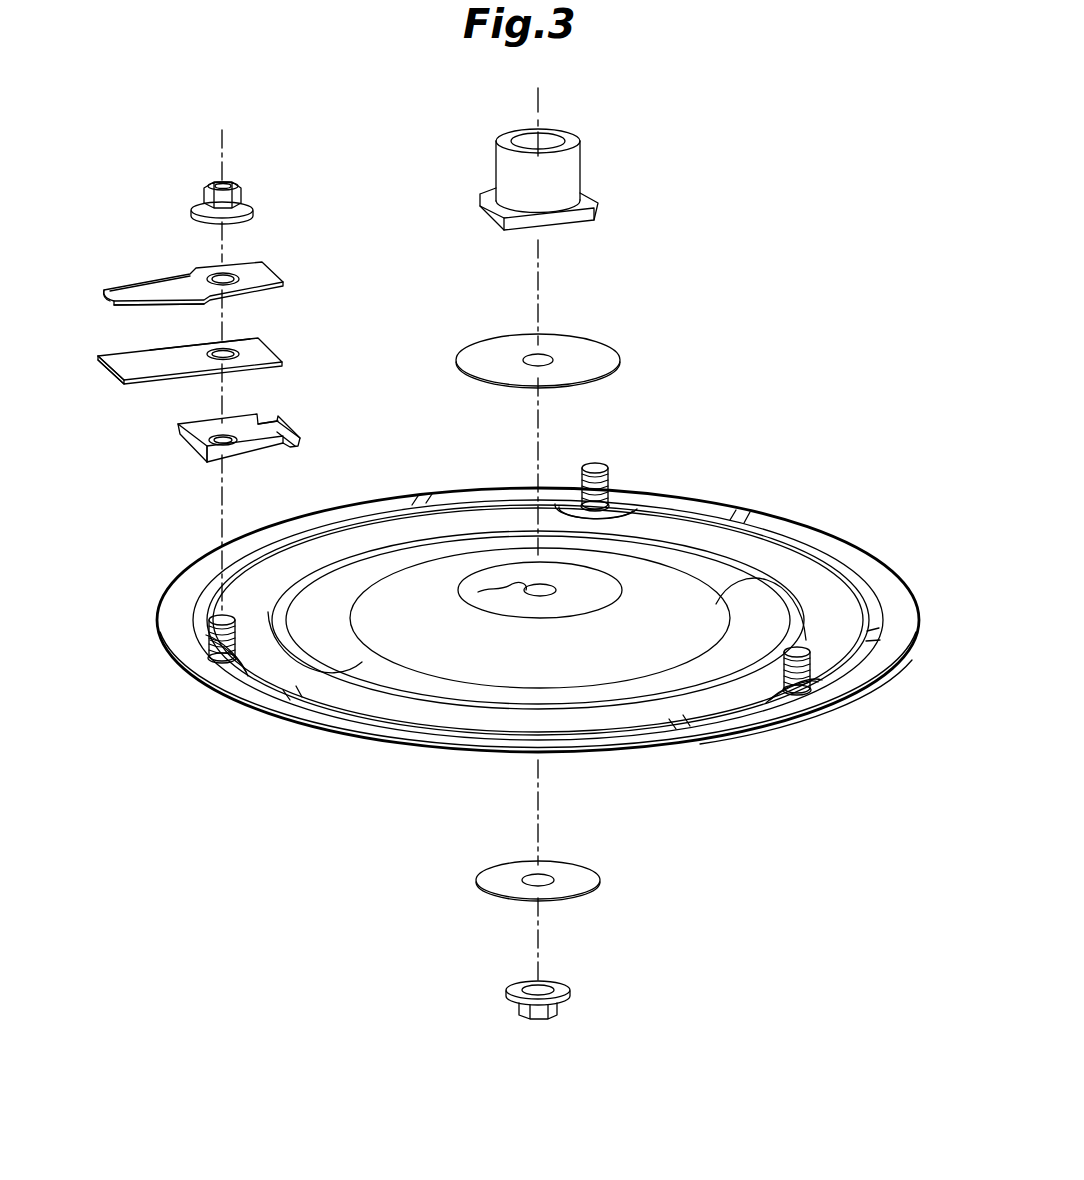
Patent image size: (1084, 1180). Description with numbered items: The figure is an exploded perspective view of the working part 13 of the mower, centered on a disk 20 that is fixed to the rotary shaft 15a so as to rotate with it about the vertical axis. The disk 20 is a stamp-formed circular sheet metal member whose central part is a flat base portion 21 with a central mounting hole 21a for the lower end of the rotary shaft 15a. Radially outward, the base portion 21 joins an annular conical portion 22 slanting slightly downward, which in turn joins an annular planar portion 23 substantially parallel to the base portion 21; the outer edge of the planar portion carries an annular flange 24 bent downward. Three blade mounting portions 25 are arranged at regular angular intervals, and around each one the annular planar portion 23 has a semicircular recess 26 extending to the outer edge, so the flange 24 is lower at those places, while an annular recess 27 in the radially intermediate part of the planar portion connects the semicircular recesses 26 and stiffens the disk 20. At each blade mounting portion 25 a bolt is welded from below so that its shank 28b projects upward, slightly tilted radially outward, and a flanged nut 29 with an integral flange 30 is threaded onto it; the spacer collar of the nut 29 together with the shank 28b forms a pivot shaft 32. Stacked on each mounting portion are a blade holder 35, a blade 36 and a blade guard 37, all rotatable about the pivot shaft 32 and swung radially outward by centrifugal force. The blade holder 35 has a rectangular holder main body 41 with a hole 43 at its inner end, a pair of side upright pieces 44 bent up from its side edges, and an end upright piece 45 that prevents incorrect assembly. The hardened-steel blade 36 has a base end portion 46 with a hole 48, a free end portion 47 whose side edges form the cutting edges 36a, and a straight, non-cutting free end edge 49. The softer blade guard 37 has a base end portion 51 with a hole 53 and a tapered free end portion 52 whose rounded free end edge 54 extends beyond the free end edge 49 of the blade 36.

The working part 13 is at (765, 150).
The rotary shaft 15a is at (575, 173).
The disk 20 is at (796, 520).
The base portion 21 is at (598, 598).
The central mounting hole 21a is at (472, 592).
The conical portion 22 is at (812, 578).
The annular planar portion 23 is at (890, 580).
The annular flange 24 is at (892, 660).
The blade mounting portion 25 is at (632, 506).
The semicircular recess 26 is at (714, 504).
The annular recess 27 is at (842, 606).
The shank 28b is at (604, 478).
The nut 29 is at (232, 190).
The flange 30 is at (200, 206).
The pivot shaft 32 is at (600, 464).
The blade holder 35 is at (174, 452).
The blade 36 is at (112, 380).
The cutting edge 36a is at (142, 356).
The blade guard 37 is at (104, 304).
The holder main body 41 is at (198, 454).
The hole 43 is at (228, 434).
The side upright piece 44 is at (204, 430).
The end upright piece 45 is at (294, 430).
The base end portion 46 is at (282, 360).
The free end portion 47 is at (172, 350).
The hole 48 is at (230, 348).
The free end edge 49 is at (100, 364).
The base end portion 51 is at (265, 276).
The free end portion 52 is at (154, 278).
The hole 53 is at (228, 270).
The free end edge 54 is at (100, 294).